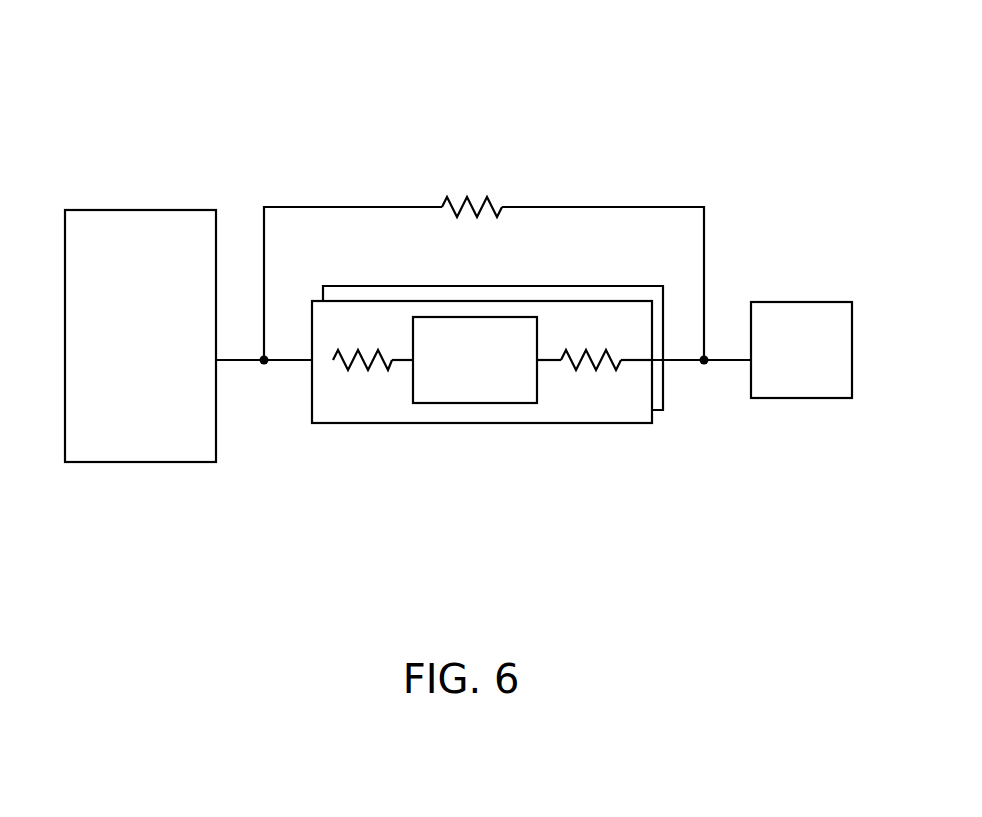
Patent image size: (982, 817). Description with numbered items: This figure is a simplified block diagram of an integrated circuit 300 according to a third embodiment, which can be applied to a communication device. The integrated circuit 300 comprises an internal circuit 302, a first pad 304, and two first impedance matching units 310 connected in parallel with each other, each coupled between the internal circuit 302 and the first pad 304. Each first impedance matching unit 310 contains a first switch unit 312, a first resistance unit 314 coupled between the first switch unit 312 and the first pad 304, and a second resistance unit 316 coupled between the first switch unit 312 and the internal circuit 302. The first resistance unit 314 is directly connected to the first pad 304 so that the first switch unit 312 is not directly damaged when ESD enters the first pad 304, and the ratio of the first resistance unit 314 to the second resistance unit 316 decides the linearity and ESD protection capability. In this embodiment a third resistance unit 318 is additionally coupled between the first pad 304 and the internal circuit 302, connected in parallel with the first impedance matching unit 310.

The integrated circuit 300 is at (699, 73).
The internal circuit 302 is at (139, 210).
The first pad 304 is at (800, 302).
The first impedance matching unit 310 is at (542, 301).
The first switch unit 312 is at (476, 405).
The first resistance unit 314 is at (585, 375).
The second resistance unit 316 is at (357, 375).
The third resistance unit 318 is at (473, 197).